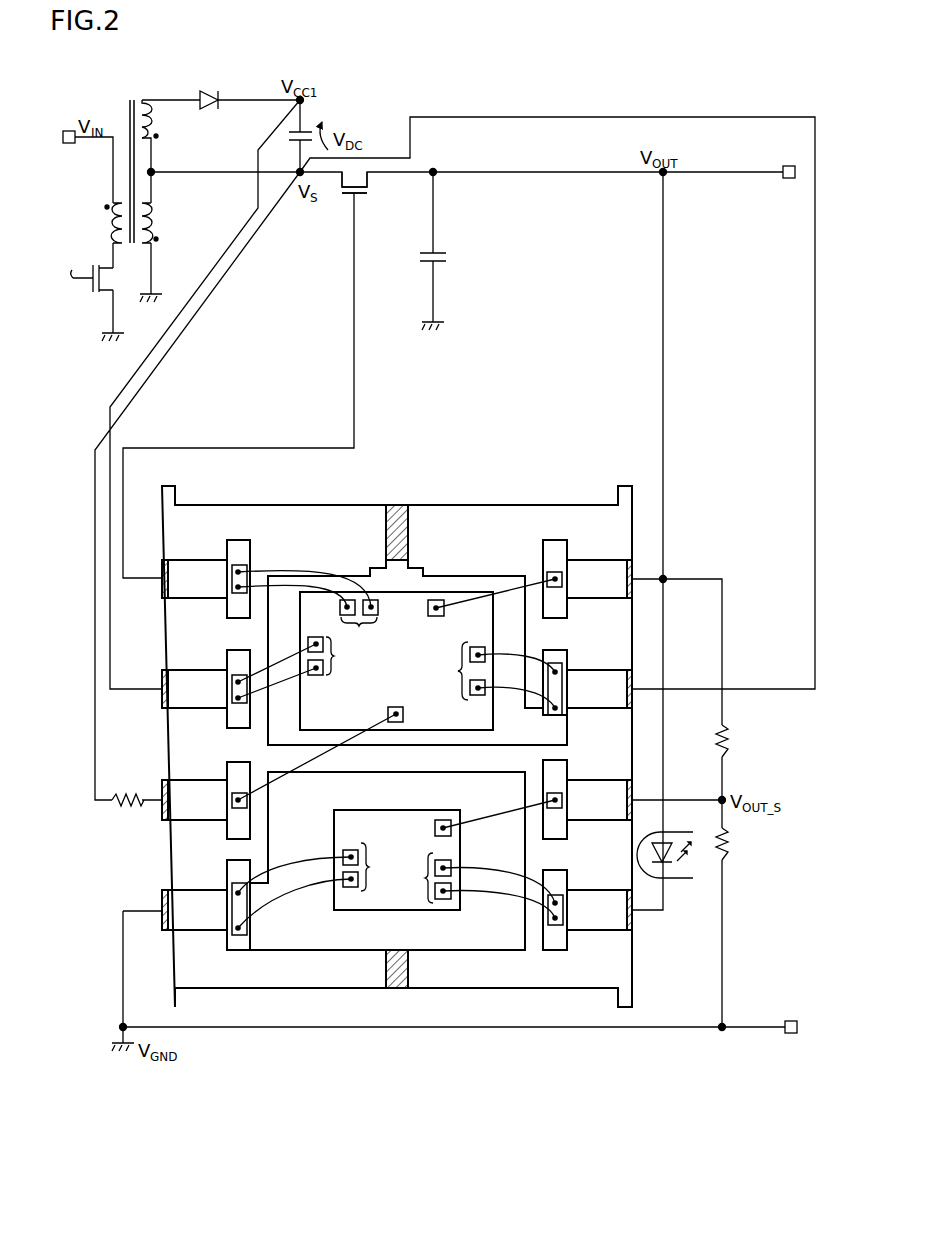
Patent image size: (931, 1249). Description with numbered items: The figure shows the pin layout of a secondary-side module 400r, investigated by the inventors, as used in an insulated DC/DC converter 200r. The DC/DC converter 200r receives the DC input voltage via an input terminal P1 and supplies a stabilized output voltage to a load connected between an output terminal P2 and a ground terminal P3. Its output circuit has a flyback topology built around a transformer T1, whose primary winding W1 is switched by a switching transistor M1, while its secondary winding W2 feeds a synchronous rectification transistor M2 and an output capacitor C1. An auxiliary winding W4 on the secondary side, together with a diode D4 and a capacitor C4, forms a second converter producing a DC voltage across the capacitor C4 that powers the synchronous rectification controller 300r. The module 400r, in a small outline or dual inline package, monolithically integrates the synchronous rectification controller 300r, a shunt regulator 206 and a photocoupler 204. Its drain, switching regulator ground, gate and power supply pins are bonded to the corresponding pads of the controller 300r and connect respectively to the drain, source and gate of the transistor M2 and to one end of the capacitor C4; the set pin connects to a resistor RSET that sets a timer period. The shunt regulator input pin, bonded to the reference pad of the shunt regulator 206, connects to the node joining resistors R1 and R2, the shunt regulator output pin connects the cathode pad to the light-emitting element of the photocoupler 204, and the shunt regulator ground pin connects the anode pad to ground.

The input terminal P1 is at (69, 129).
The output terminal P2 is at (790, 166).
The ground terminal P3 is at (791, 1034).
The transformer T1 is at (135, 256).
The primary winding W1 is at (105, 224).
The secondary winding W2 is at (157, 224).
The auxiliary winding W4 is at (160, 132).
The diode D4 is at (213, 82).
The switching transistor M1 is at (88, 293).
The synchronous rectification transistor M2 is at (372, 195).
The capacitor C4 is at (310, 108).
The output capacitor C1 is at (449, 258).
The resistor R1 is at (733, 742).
The resistor R2 is at (733, 845).
The resistor for setting a timer period RSET is at (124, 808).
The photocoupler 204 is at (681, 880).
The secondary-side module 400r is at (518, 504).
The synchronous rectification controller 300r is at (447, 592).
The shunt regulator 206 is at (383, 807).
The DC/DC converter 200r is at (462, 1094).